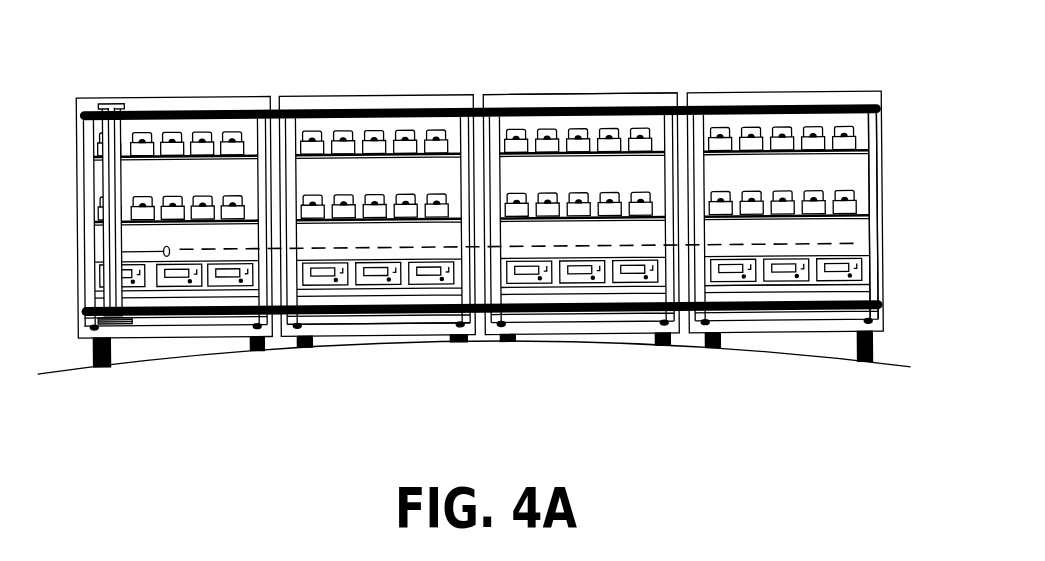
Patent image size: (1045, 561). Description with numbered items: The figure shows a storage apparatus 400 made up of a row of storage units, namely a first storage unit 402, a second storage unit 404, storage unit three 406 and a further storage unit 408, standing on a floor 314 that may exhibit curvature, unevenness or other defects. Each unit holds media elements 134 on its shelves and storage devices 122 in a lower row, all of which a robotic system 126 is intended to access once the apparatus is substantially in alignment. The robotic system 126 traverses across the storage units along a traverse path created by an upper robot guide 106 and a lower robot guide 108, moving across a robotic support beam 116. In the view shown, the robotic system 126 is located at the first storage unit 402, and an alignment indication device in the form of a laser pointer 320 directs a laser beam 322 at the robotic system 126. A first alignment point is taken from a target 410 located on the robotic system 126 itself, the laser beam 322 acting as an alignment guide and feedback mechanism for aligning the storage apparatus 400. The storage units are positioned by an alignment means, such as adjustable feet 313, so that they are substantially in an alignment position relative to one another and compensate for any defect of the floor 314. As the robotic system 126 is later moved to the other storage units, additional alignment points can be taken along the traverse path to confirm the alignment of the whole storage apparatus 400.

The storage apparatus 400 is at (481, 212).
The first storage unit 402 is at (193, 98).
The second storage unit 404 is at (300, 98).
The storage unit three 406 is at (500, 98).
The storage unit 408 is at (717, 98).
The upper robot guide 106 is at (657, 98).
The robotic system 126 is at (115, 98).
The media elements 134 is at (860, 150).
The lower robot guide 108 is at (336, 316).
The storage devices 122 is at (856, 279).
The robotic support beam 116 is at (418, 328).
The adjustable feet 313 is at (664, 358).
The floor 314 is at (158, 368).
The laser pointer 320 is at (919, 265).
The laser beam 322 is at (858, 247).
The target 410 is at (170, 250).